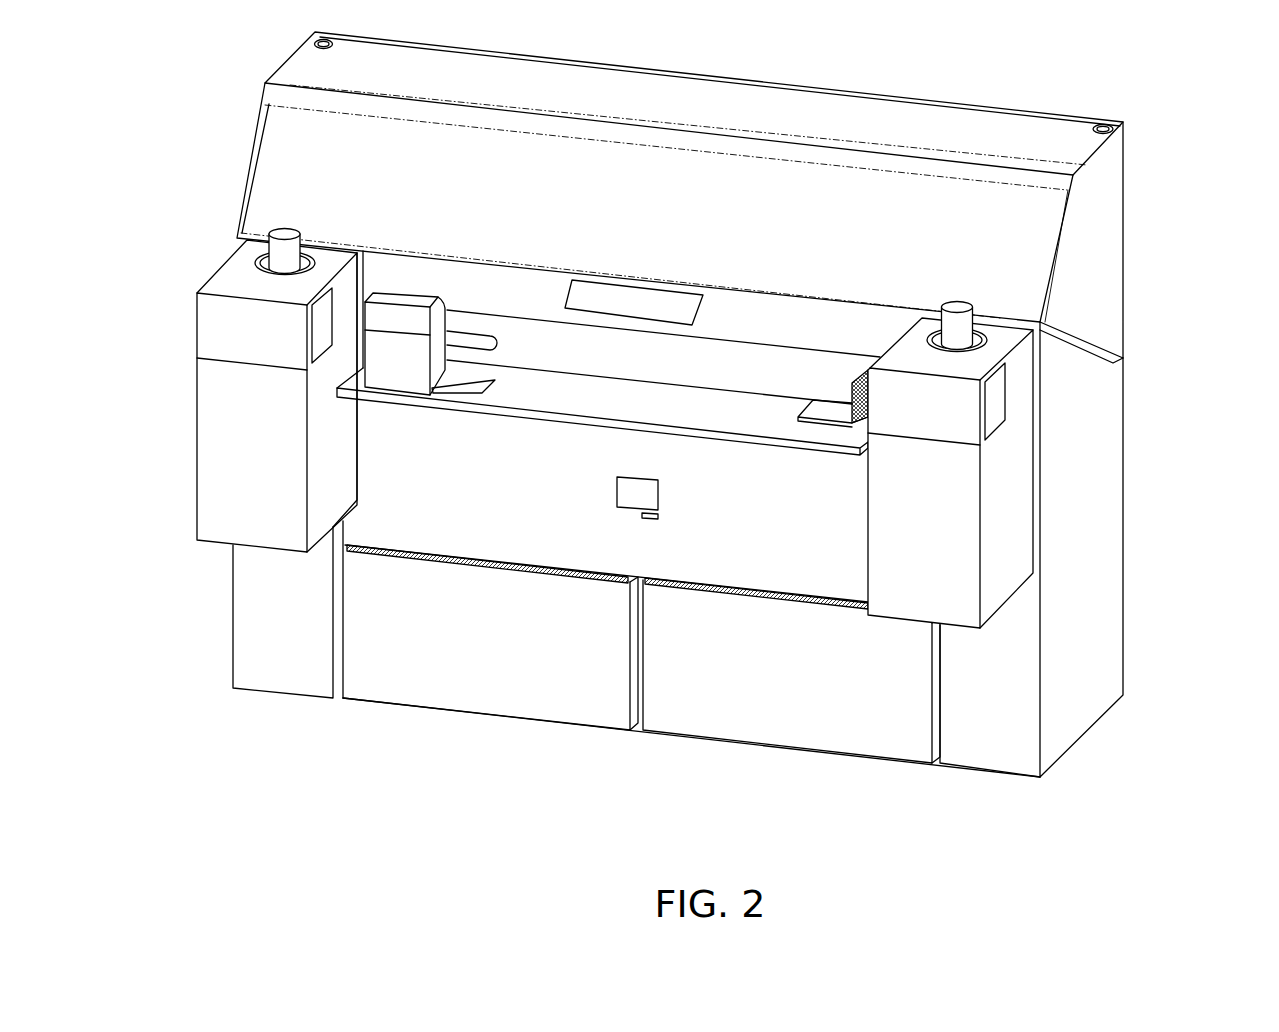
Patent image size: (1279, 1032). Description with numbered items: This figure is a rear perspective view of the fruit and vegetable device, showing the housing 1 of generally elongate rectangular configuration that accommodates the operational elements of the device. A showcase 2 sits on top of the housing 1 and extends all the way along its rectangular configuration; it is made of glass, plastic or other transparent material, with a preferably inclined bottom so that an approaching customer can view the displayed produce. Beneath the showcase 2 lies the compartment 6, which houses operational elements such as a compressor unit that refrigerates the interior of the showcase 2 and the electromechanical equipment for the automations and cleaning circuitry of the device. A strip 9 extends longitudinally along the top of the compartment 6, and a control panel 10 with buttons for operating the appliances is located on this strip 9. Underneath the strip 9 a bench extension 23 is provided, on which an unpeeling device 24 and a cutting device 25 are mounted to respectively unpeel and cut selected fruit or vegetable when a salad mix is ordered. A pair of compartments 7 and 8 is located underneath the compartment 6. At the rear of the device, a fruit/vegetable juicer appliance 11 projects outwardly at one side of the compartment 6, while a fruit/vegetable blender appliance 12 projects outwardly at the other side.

The housing 1 is at (1122, 443).
The showcase 2 is at (1123, 218).
The compartment 6 is at (727, 555).
The compartment 7 is at (495, 678).
The compartment 8 is at (785, 728).
The strip 9 is at (769, 322).
The control panel 10 is at (630, 297).
The fruit/vegetable juicer appliance 11 is at (1008, 493).
The fruit/vegetable blender appliance 12 is at (197, 405).
The bench extension 23 is at (527, 400).
The unpeeling device 24 is at (389, 312).
The cutting device 25 is at (820, 413).